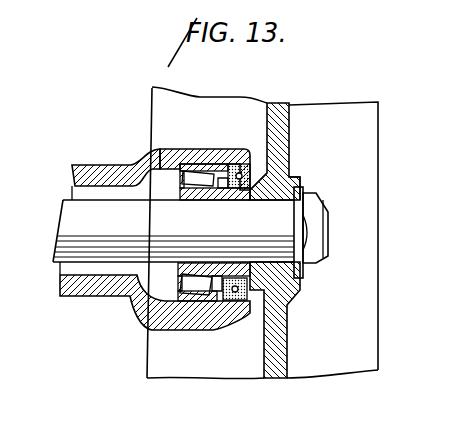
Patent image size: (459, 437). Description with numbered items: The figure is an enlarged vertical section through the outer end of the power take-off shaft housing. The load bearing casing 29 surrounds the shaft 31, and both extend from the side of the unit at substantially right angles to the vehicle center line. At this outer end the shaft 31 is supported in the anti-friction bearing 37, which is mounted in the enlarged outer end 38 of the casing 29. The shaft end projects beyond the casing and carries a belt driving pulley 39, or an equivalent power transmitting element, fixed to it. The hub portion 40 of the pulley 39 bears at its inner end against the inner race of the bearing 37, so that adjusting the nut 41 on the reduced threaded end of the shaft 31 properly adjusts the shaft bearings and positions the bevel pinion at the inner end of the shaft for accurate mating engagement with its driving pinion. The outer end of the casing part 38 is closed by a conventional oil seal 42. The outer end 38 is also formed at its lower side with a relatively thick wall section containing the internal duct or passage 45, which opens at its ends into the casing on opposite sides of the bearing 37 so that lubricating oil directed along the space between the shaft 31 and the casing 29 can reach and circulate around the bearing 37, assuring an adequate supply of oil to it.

The load bearing casing 29 is at (90, 170).
The shaft 31 is at (72, 247).
The anti-friction bearing 37 is at (197, 280).
The enlarged outer end of the casing 38 is at (198, 157).
The belt driving pulley 39 is at (297, 109).
The hub portion of the pulley 40 is at (260, 194).
The nut 41 is at (315, 271).
The oil seal 42 is at (250, 306).
The internal duct or passage 45 is at (153, 318).